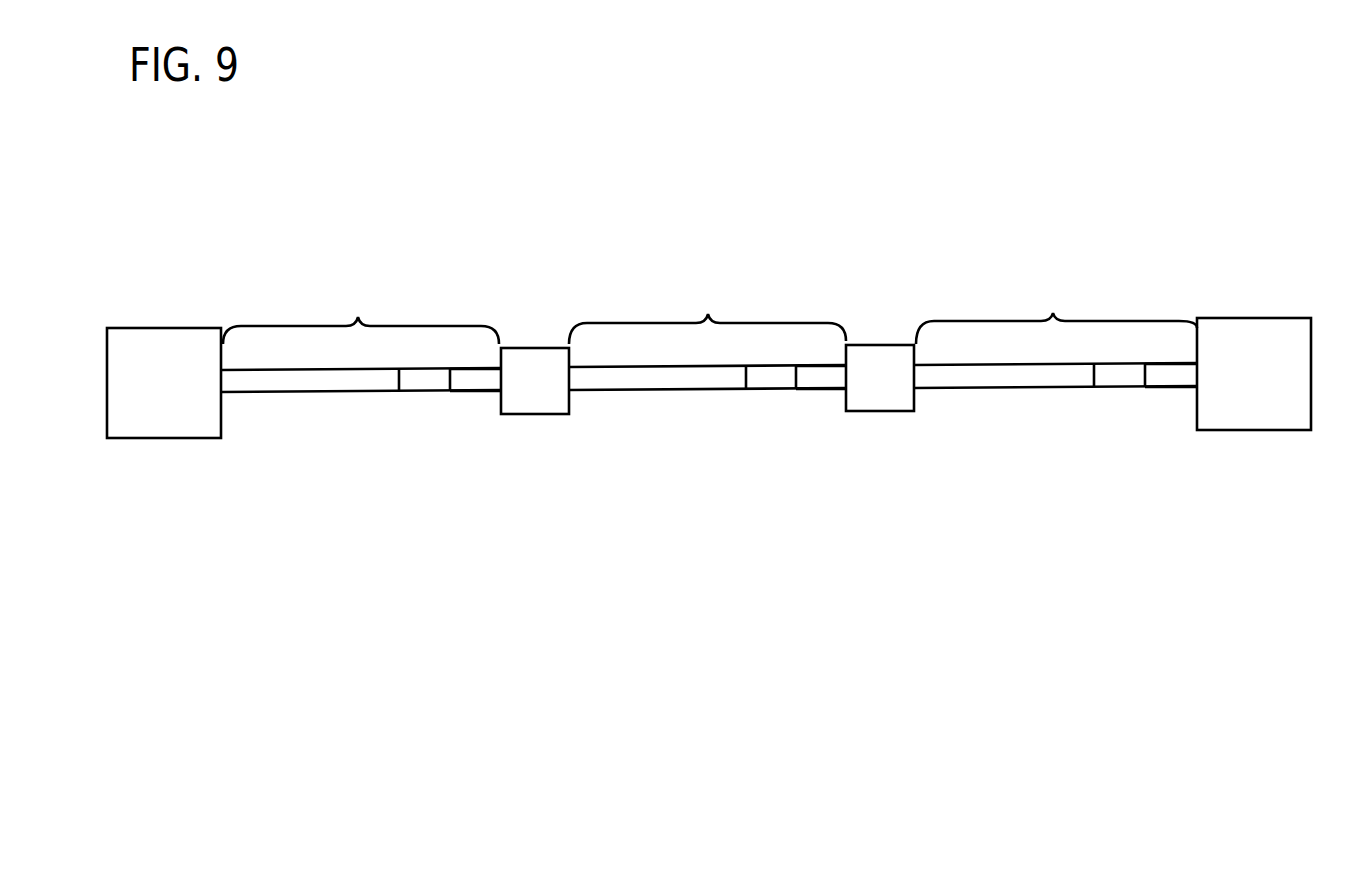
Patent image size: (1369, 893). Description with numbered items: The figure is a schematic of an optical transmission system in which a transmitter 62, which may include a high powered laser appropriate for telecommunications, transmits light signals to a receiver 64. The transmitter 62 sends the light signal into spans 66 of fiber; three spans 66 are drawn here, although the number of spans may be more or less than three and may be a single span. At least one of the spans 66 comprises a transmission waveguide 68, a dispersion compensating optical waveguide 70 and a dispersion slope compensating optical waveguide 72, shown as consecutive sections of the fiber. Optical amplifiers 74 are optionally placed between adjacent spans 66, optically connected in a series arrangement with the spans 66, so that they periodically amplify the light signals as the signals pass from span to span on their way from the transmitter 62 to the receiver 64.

The transmitter 62 is at (182, 304).
The receiver 64 is at (1272, 294).
The span 66 is at (357, 316).
The transmission waveguide 68 is at (309, 393).
The dispersion compensating optical waveguide 70 is at (425, 393).
The dispersion slope compensating optical waveguide 72 is at (480, 393).
The optical amplifier 74 is at (532, 347).